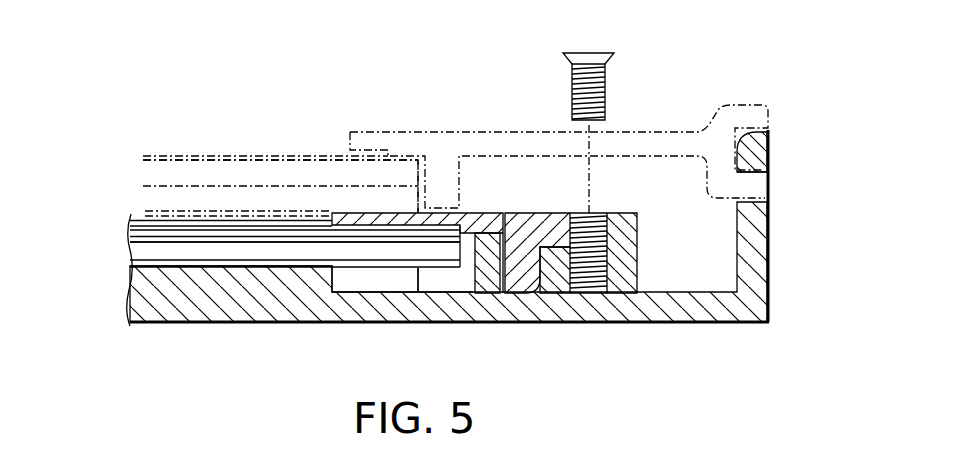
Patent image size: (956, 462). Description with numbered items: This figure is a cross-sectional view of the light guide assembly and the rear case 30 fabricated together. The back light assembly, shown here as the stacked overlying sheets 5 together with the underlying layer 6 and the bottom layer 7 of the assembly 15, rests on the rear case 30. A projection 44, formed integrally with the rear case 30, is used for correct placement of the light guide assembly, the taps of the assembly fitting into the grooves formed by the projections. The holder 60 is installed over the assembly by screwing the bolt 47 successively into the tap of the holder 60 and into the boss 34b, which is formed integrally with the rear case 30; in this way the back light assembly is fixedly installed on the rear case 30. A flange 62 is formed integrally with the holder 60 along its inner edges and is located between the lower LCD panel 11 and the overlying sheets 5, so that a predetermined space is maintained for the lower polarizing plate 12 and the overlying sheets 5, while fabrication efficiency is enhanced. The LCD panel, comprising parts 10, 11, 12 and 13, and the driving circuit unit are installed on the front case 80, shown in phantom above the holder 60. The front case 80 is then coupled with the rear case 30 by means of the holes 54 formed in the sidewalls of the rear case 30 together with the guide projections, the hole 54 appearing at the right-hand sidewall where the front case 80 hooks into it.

The overlying sheets 5 is at (127, 238).
The light guide plate 6 is at (138, 252).
The lower frame 7 is at (237, 266).
The LCD panel 10 is at (275, 175).
The lower LCD panel 11 is at (198, 193).
The lower polarizing plate 12 is at (168, 212).
The LCD panel 13 is at (158, 155).
The display module 15 is at (113, 291).
The rear case 30 is at (672, 313).
The boss 34b is at (627, 265).
The projections for correct placement 44 is at (445, 283).
The bolt 47 is at (591, 50).
The hole 54 is at (757, 187).
The holder 60 is at (525, 213).
The flange 62 is at (377, 213).
The front case 80 is at (653, 132).